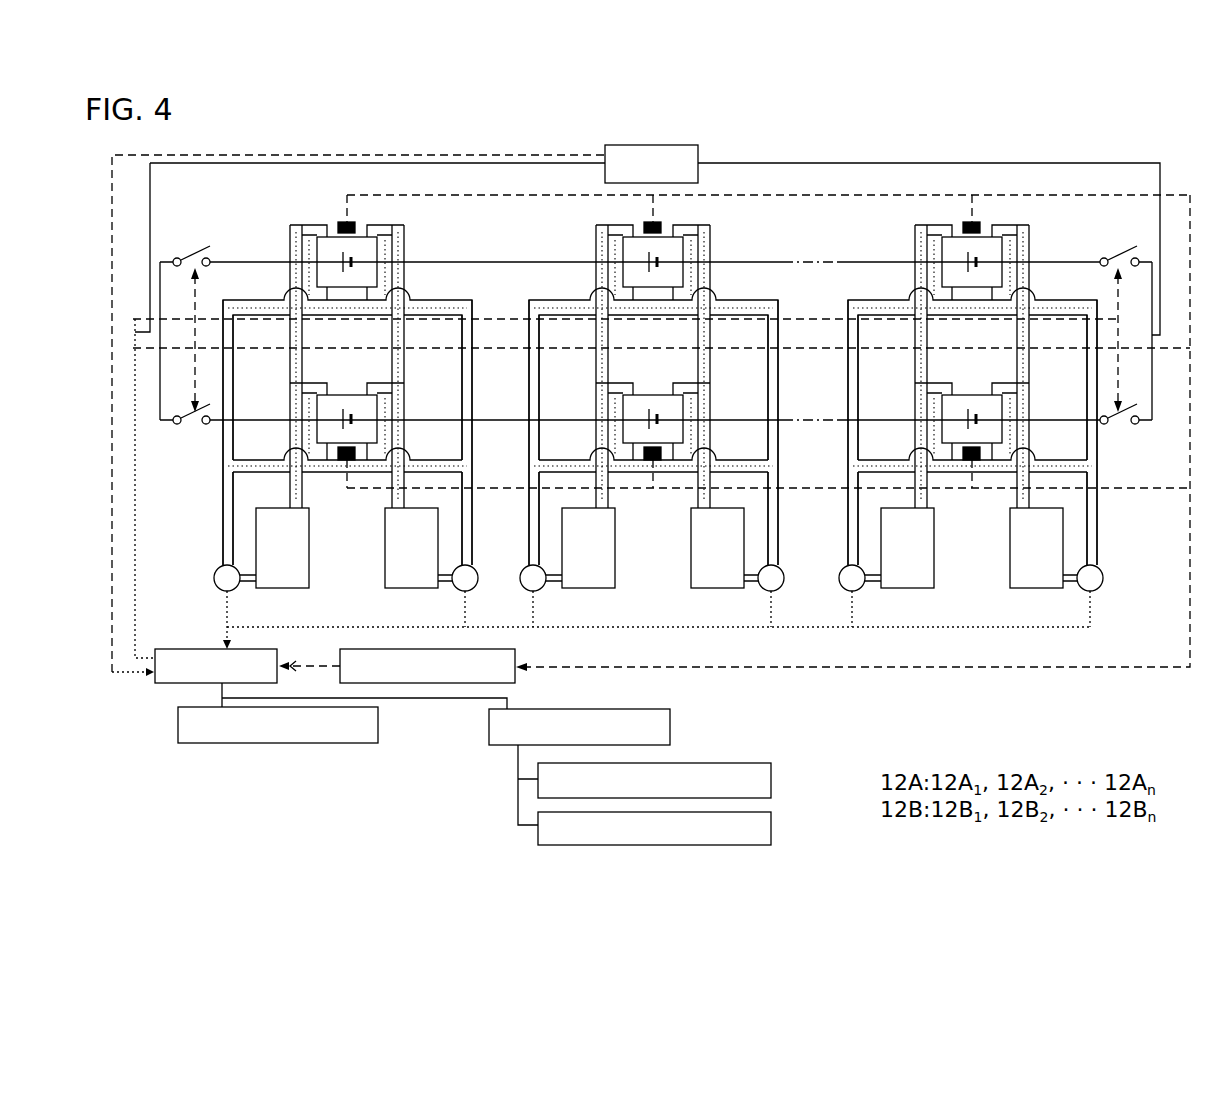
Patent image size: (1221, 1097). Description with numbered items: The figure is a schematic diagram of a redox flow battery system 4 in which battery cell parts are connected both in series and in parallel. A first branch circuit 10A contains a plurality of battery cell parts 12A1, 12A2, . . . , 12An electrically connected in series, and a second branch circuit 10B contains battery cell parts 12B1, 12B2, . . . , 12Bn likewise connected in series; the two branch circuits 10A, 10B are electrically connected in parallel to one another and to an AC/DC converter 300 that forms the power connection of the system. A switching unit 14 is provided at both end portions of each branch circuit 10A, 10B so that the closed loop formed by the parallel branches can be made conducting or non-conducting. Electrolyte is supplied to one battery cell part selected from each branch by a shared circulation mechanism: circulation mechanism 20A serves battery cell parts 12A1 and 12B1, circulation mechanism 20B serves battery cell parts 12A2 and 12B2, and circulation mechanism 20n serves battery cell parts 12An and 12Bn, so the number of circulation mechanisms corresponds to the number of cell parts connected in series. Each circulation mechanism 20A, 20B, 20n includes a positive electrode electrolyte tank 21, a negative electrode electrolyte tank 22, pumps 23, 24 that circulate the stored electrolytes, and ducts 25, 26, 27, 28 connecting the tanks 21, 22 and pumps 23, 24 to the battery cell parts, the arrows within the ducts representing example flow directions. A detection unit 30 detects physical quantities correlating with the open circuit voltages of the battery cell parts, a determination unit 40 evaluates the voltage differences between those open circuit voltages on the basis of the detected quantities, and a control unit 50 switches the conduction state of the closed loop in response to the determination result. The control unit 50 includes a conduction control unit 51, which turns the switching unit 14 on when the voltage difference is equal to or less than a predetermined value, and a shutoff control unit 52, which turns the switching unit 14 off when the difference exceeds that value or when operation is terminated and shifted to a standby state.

The power supply system 4 is at (1104, 687).
The AC/DC converter 300 is at (700, 151).
The branch circuit 10A is at (1145, 258).
The branch circuit 10B is at (1138, 426).
The switching unit 14 is at (194, 254).
The battery cell part 12A1 is at (345, 293).
The battery cell part 12A2 is at (650, 293).
The battery cell part 12An is at (970, 294).
The battery cell part 12B1 is at (348, 400).
The battery cell part 12B2 is at (654, 400).
The battery cell part 12Bn is at (973, 400).
The detection unit 30 is at (336, 224).
The circulation mechanism 20A is at (380, 589).
The cooling unit 20B is at (622, 565).
The circulation mechanism 20n is at (950, 569).
The positive electrode electrolyte tank 21 is at (310, 535).
The negative electrode electrolyte tank 22 is at (385, 562).
The pump 23 is at (215, 571).
The pump 24 is at (478, 568).
The duct 25 is at (222, 500).
The duct 26 is at (474, 527).
The duct 27 is at (289, 490).
The duct 28 is at (391, 490).
The determination unit 40 is at (518, 651).
The control unit 50 is at (165, 684).
The conduction control unit 51 is at (378, 730).
The shutoff control unit 52 is at (670, 727).